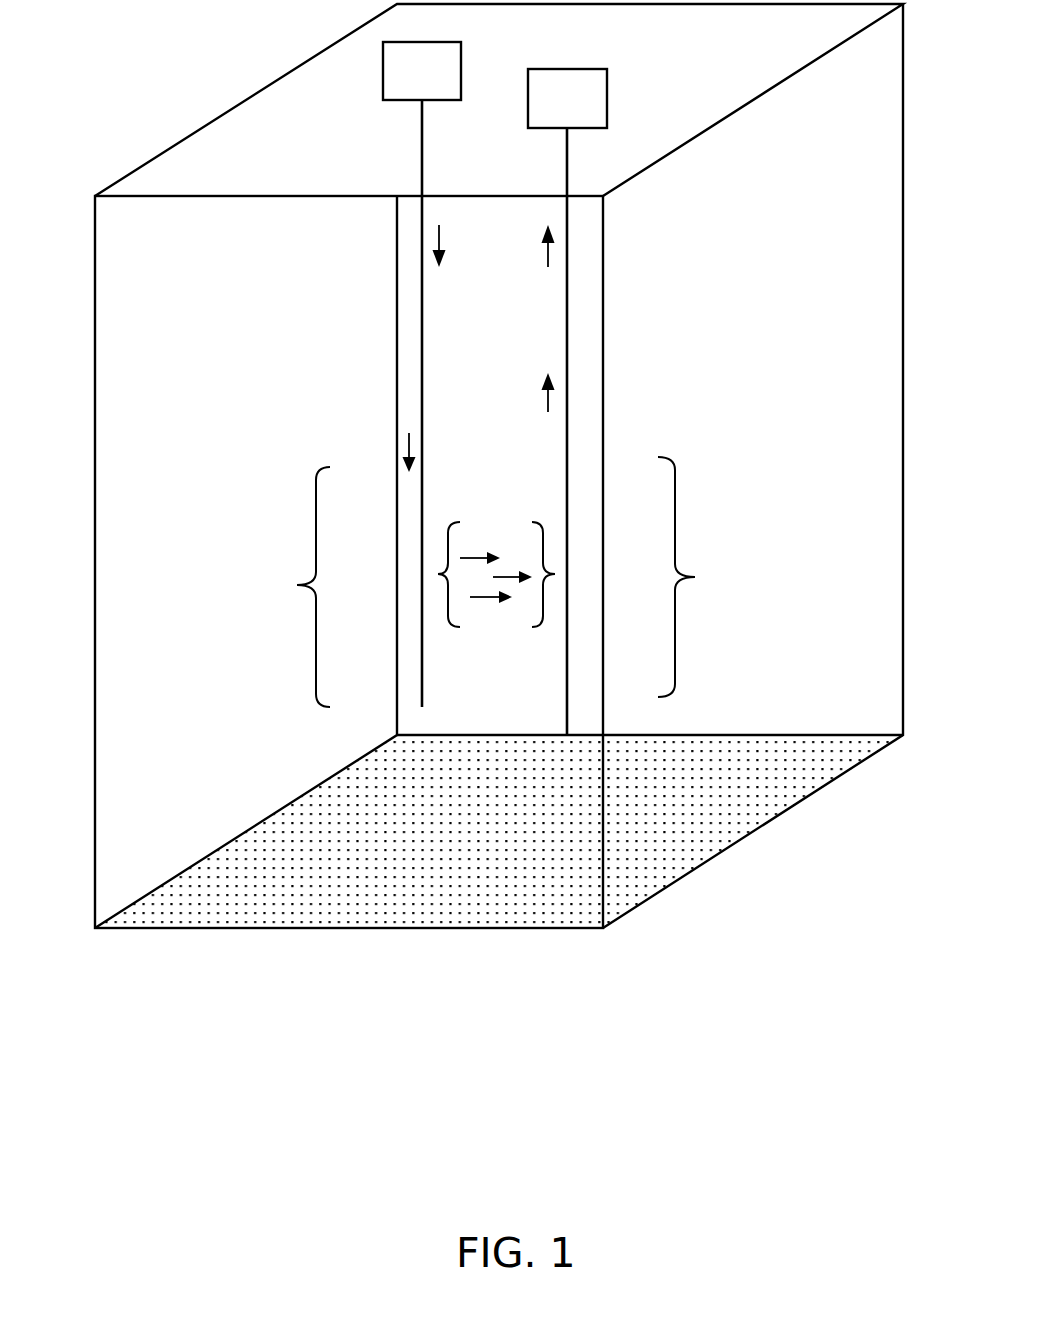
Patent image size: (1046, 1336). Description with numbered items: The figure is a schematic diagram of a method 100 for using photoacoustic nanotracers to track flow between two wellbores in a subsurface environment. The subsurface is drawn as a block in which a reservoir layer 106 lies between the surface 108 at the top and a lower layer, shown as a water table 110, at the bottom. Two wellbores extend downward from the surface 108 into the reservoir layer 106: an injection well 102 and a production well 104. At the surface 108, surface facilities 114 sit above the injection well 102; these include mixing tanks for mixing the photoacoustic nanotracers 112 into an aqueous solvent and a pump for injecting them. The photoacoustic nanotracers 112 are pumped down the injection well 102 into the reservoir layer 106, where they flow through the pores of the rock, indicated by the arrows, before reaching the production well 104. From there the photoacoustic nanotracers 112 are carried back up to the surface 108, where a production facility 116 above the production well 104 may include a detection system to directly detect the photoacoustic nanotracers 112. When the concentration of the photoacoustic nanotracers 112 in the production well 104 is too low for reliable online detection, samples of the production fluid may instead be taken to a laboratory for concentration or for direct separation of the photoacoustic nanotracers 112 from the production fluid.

The method 100 is at (500, 611).
The injection well 102 is at (422, 515).
The production well 104 is at (568, 437).
The reservoir layer 106 is at (287, 587).
The surface 108 is at (270, 110).
The water table 110 is at (392, 930).
The photoacoustic nanotracers 112 is at (406, 446).
The surface facilities 114 is at (430, 42).
The production facility 116 is at (575, 69).